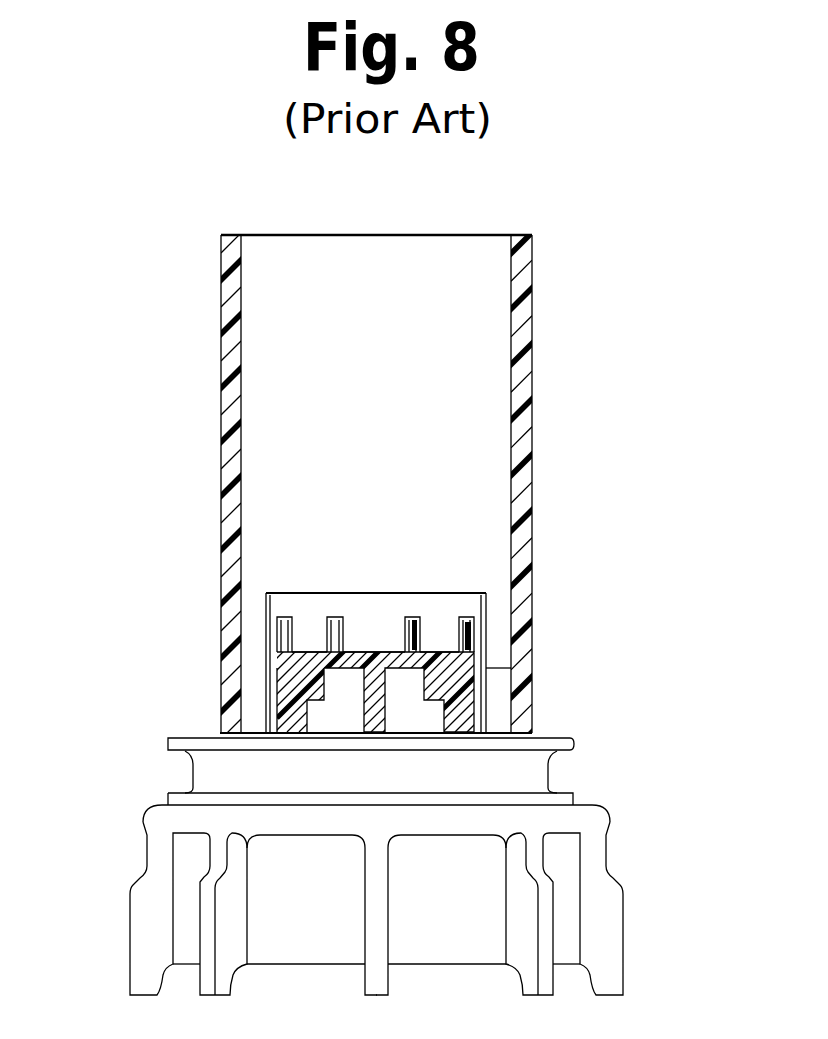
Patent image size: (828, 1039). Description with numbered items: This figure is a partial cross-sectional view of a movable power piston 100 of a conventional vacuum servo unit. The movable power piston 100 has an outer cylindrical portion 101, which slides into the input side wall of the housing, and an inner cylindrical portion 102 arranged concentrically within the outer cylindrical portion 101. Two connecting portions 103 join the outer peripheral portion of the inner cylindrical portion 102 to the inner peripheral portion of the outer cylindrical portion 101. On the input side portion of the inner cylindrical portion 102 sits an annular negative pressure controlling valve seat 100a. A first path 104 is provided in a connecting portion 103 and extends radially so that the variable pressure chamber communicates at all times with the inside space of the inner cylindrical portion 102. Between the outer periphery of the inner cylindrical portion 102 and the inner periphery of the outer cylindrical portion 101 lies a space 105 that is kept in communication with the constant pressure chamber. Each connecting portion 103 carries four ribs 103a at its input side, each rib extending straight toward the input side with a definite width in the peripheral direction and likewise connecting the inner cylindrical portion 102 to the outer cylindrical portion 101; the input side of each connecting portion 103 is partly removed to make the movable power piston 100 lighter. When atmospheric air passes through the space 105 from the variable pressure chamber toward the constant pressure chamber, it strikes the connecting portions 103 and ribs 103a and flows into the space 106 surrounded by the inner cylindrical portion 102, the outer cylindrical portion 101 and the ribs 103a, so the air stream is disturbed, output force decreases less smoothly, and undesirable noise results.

The movable power piston 100 is at (568, 380).
The annular negative pressure controlling valve seat 100a is at (447, 592).
The outer cylindrical portion 101 is at (223, 393).
The inner cylindrical portion 102 is at (490, 603).
The connecting portion 103 is at (450, 692).
The ribs 103a is at (457, 640).
The first path 104 is at (325, 717).
The space 105 is at (497, 640).
The space 106 is at (308, 627).